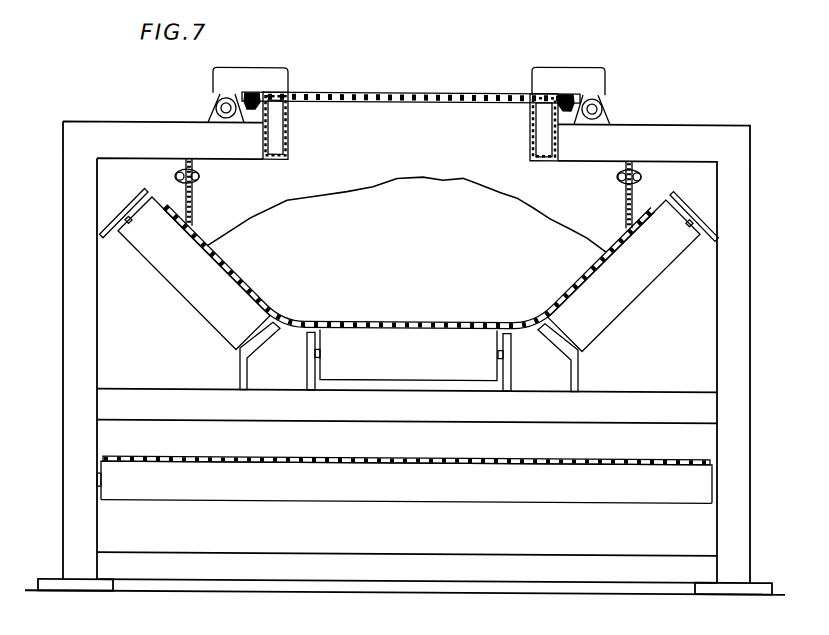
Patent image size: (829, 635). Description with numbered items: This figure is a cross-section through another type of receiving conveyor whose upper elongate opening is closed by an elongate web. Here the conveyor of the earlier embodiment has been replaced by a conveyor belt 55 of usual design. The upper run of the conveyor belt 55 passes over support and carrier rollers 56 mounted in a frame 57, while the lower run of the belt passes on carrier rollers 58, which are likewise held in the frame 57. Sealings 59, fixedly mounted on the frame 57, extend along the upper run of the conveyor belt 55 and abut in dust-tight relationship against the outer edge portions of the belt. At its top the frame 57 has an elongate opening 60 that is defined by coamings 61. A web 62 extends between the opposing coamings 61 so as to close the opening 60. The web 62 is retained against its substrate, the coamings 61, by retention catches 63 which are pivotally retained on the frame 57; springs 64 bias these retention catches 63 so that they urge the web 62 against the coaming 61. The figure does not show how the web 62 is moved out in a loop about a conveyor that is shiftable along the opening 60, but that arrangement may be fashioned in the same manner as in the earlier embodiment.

The conveyor belt 55 is at (604, 274).
The support and carrier rollers 56 is at (194, 288).
The frame 57 is at (99, 354).
The carrier rollers 58 is at (229, 489).
The sealings 59 is at (196, 224).
The elongate opening 60 is at (407, 97).
The coamings 61 is at (282, 132).
The web 62 is at (362, 91).
The retention catches 63 is at (257, 77).
The springs 64 is at (214, 96).